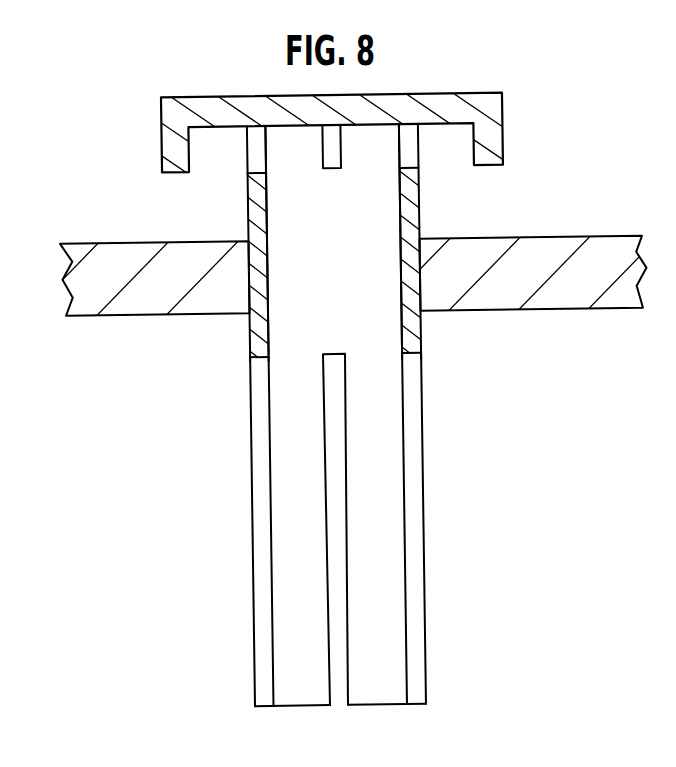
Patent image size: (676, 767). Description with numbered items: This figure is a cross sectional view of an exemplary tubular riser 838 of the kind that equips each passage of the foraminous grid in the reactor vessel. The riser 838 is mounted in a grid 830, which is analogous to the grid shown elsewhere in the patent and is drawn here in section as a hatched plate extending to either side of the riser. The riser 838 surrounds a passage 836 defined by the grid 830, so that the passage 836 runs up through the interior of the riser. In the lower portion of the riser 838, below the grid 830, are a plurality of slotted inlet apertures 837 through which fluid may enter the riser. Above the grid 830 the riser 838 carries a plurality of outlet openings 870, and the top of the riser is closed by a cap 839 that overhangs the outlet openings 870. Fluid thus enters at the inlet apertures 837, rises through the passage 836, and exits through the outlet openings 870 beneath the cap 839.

The grid 830 is at (138, 243).
The passage 836 is at (328, 250).
The slotted inlet apertures 837 is at (263, 497).
The riser 838 is at (422, 578).
The cap 839 is at (504, 135).
The outlet openings 870 is at (268, 160).